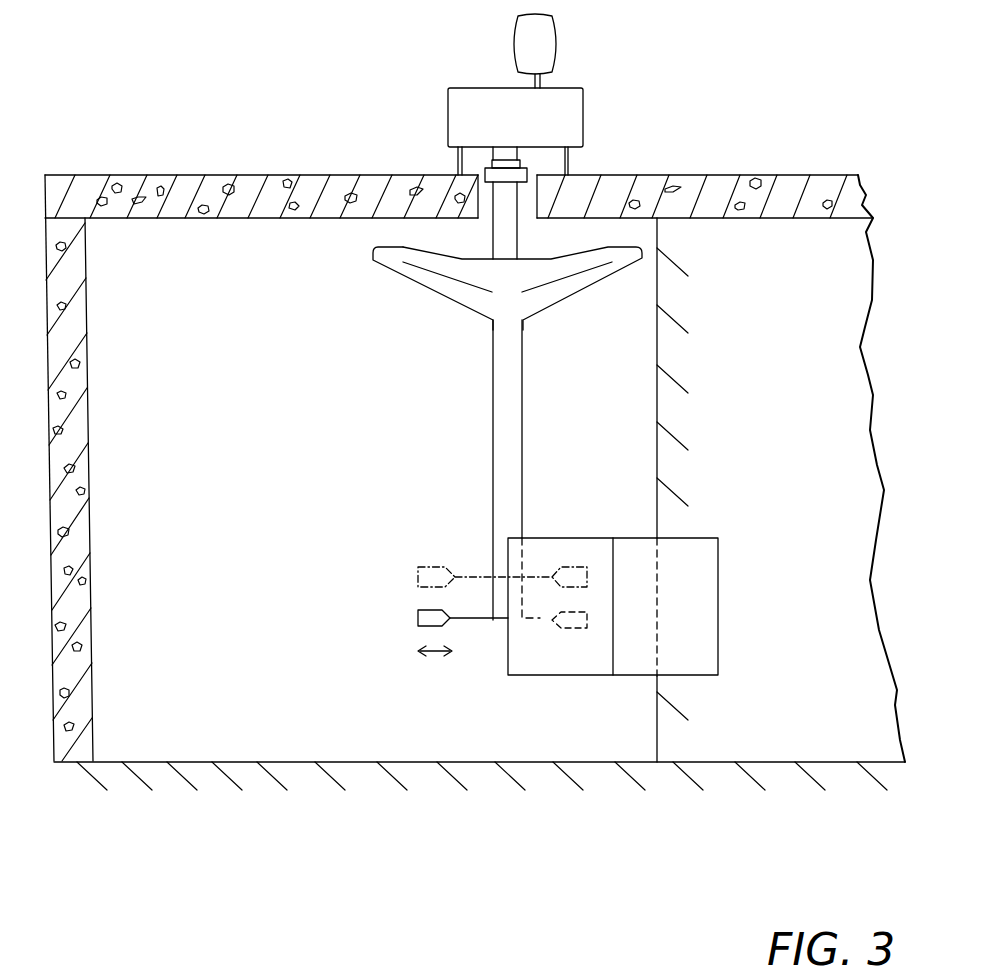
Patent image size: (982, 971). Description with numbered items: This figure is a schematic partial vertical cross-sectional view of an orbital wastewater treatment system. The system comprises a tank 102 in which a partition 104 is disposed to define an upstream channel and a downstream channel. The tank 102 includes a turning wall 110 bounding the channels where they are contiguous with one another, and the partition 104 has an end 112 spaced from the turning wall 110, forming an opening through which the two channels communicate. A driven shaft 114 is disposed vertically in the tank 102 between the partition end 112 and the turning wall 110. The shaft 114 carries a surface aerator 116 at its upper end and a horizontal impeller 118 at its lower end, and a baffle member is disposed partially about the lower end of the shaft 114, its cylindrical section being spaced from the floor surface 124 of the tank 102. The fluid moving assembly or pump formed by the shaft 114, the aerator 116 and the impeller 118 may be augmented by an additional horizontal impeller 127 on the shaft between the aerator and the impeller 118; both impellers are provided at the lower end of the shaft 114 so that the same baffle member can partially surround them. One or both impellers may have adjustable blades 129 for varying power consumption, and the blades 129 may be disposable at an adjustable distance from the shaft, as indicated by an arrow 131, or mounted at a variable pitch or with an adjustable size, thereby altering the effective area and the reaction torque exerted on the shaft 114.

The tank 102 is at (228, 168).
The partition 104 is at (717, 253).
The turning wall 110 is at (87, 703).
The end of partition 112 is at (657, 725).
The driven shaft 114 is at (497, 475).
The surface aerator 116 is at (465, 298).
The horizontal impeller 118 is at (418, 621).
The floor surface 124 is at (400, 762).
The additional horizontal impeller 127 is at (416, 571).
The adjustable blades 129 is at (565, 628).
The arrow 131 is at (435, 657).